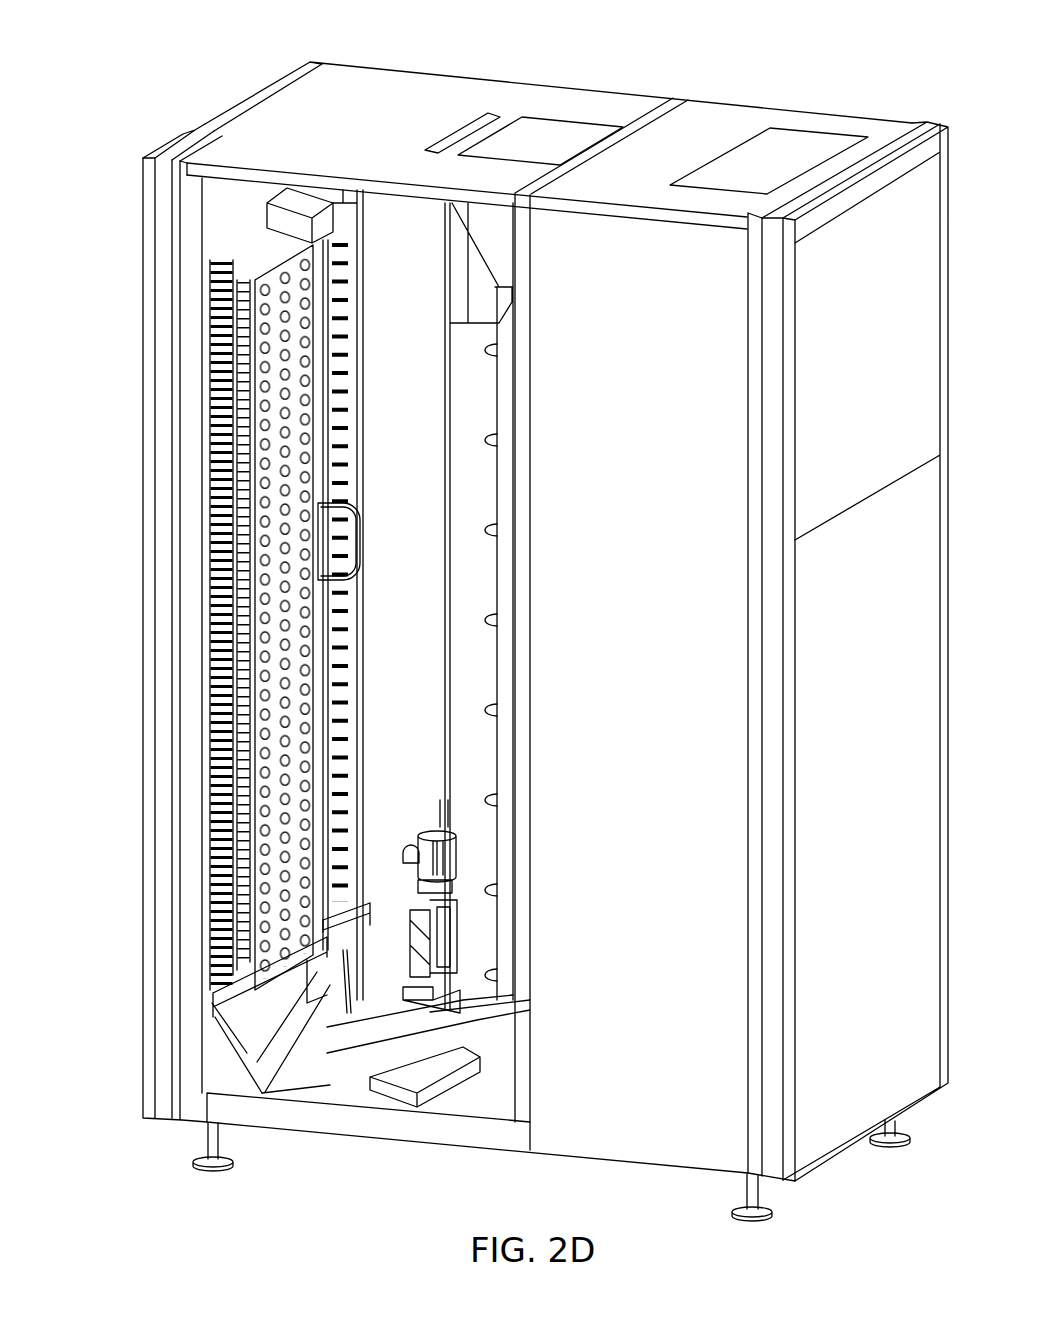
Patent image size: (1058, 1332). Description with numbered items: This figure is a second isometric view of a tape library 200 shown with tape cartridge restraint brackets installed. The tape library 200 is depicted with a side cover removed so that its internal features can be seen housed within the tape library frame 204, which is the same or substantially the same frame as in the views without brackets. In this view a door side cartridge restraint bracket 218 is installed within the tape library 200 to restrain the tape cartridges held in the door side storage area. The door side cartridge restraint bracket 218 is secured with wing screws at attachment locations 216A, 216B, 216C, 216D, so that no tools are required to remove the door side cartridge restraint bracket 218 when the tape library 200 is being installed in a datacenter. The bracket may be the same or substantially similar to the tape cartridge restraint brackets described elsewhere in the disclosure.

The tape library 200 is at (202, 28).
The tape library frame 204 is at (607, 82).
The attachment location 216A is at (277, 237).
The attachment location 216B is at (206, 274).
The attachment location 216C is at (260, 993).
The attachment location 216D is at (290, 972).
The door side cartridge restraint bracket 218 is at (352, 965).